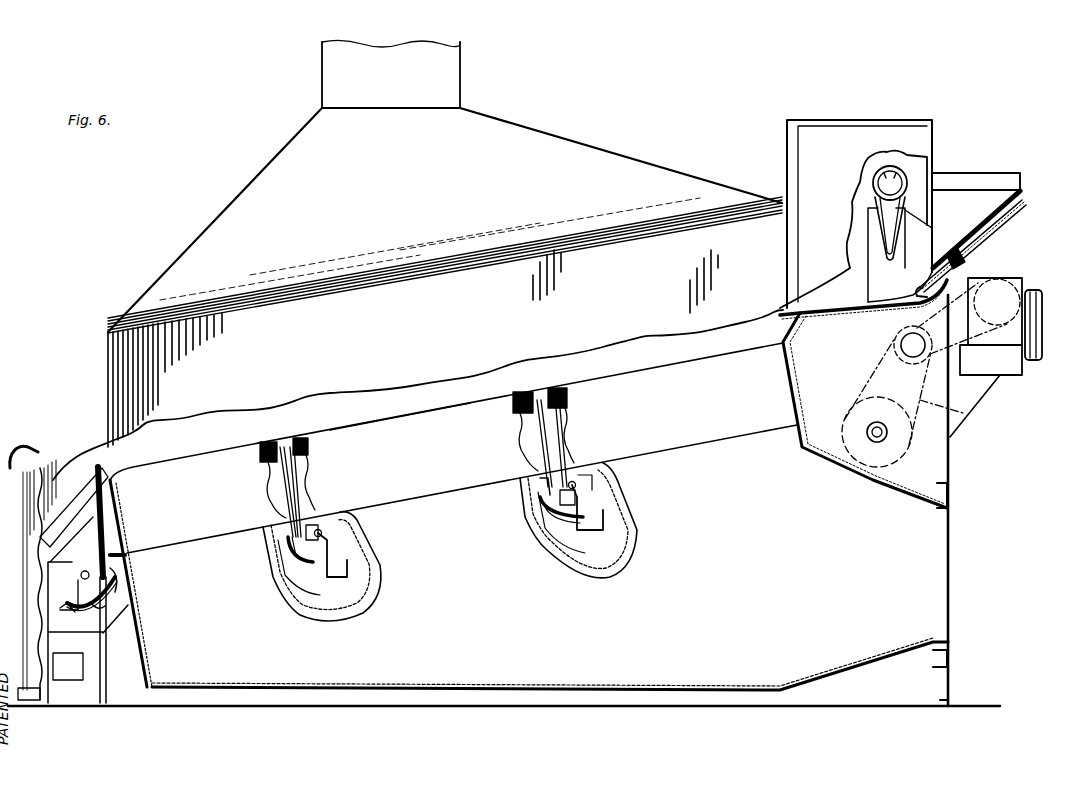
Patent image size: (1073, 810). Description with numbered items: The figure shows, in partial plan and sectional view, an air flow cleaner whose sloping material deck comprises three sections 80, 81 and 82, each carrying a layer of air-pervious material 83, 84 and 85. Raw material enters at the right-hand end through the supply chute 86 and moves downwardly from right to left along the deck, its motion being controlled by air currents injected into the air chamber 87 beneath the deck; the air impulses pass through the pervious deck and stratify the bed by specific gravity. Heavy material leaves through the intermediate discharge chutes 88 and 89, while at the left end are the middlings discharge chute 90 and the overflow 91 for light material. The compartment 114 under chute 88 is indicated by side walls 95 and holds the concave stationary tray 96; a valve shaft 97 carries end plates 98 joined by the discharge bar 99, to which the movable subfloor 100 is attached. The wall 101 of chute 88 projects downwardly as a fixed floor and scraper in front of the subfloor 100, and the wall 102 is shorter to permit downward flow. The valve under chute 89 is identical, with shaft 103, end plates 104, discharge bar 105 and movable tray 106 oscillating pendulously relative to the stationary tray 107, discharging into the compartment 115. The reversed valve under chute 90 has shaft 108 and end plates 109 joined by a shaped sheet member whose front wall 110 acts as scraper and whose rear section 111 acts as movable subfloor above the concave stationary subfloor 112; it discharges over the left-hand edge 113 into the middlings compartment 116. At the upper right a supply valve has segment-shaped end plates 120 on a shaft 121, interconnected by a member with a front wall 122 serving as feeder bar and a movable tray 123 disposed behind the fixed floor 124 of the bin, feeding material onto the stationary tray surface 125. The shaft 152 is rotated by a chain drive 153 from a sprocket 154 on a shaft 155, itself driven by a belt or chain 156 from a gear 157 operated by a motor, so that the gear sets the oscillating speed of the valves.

The deck section 80 is at (213, 447).
The deck section 81 is at (420, 410).
The deck section 82 is at (670, 362).
The layer of air-pervious material 83 is at (266, 440).
The layer of air-pervious material 84 is at (305, 438).
The layer of air-pervious material 85 is at (558, 388).
The supply chute 86 is at (957, 195).
The air chamber 87 is at (690, 670).
The intermediate discharge chute 88 is at (547, 426).
The intermediate discharge chute 89 is at (295, 478).
The discharge chute 90 is at (100, 522).
The overflow 91 is at (100, 466).
The side walls 95 is at (582, 518).
The stationary tray 96 is at (603, 521).
The valve shaft 97 is at (583, 482).
The end plates 98 is at (572, 498).
The discharge plunger or bar 99 is at (553, 520).
The movable tray or subfloor 100 is at (540, 508).
The wall of chute 88 101 is at (527, 481).
The wall 102 is at (573, 481).
The shaft 103 is at (322, 533).
The end plates 104 is at (332, 542).
The discharge plunger or bar 105 is at (318, 558).
The movable subfloor or tray 106 is at (285, 562).
The stationary subfloor or tray 107 is at (350, 572).
The shaft 108 is at (85, 571).
The end plates 109 is at (78, 588).
The front wall or scraper surface 110 is at (97, 613).
The rear section 111 is at (117, 582).
The stationary subfloor 112 is at (117, 600).
The left hand edge 113 is at (65, 612).
The compartment 114 is at (613, 550).
The compartment 115 is at (345, 615).
The middlings compartment 116 is at (57, 633).
The segment-shaped end plates 120 is at (875, 278).
The shaft 121 is at (880, 175).
The front wall 122 is at (868, 292).
The movable tray or subfloor section 123 is at (960, 262).
The fixed floor 124 is at (983, 225).
The stationary tray surface 125 is at (836, 312).
The shaft 152 is at (877, 434).
The chain drive 153 is at (958, 413).
The sprocket 154 is at (900, 360).
The shaft 155 is at (905, 346).
The belt or chain 156 is at (975, 298).
The gear 157 is at (1020, 285).